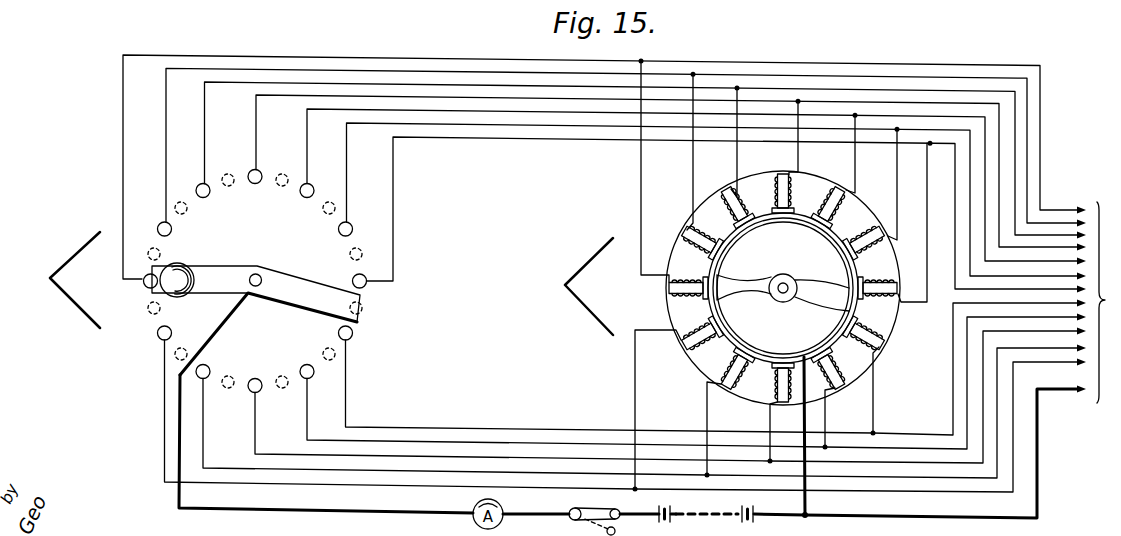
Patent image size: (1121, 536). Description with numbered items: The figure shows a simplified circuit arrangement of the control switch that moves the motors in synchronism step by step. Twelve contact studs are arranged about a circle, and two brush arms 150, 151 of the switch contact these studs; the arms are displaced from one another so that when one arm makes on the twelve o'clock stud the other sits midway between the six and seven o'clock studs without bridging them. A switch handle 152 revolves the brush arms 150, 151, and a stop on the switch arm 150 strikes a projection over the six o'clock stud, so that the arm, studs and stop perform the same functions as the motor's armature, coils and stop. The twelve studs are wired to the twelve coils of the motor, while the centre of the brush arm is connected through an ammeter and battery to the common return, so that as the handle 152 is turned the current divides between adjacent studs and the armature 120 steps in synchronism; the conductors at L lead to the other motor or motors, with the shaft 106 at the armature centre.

The brush arm 150 is at (148, 292).
The brush arm 151 is at (355, 323).
The switch handle 152 is at (182, 264).
The armature 120 is at (745, 278).
The shaft 106 is at (783, 293).
The leads L is at (1099, 302).